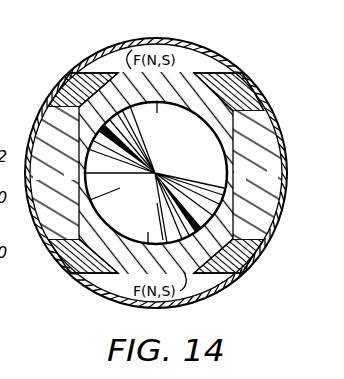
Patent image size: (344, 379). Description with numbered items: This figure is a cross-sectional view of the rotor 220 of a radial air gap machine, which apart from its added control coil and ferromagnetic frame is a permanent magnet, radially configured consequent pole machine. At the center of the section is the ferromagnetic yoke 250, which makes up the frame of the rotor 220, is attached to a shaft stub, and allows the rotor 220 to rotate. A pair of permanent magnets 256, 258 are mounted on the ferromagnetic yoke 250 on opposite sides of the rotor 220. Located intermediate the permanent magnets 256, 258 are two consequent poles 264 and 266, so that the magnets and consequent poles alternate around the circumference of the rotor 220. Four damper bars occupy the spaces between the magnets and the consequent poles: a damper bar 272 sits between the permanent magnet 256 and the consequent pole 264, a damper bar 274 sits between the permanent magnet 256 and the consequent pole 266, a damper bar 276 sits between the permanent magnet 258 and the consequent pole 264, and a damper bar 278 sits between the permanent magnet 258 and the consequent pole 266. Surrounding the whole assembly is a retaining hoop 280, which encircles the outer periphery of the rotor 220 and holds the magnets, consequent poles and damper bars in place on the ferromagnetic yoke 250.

The rotor 220 is at (24, 128).
The ferromagnetic yoke 250 is at (127, 133).
The permanent magnet 256 is at (268, 122).
The permanent magnet 258 is at (52, 209).
The consequent pole 264 is at (128, 44).
The consequent pole 266 is at (199, 300).
The damper bar 272 is at (238, 86).
The damper bar 274 is at (243, 262).
The damper bar 276 is at (69, 73).
The damper bar 278 is at (72, 278).
The retaining hoop 280 is at (213, 35).